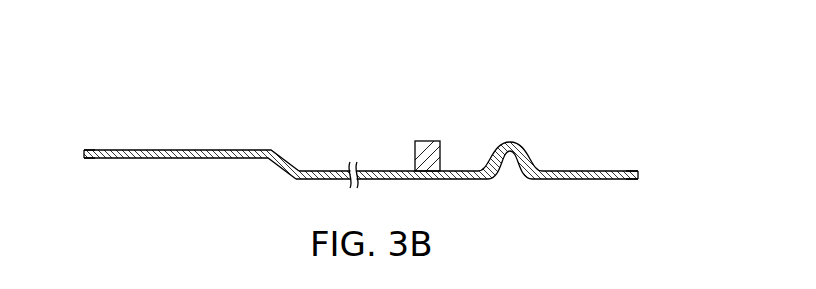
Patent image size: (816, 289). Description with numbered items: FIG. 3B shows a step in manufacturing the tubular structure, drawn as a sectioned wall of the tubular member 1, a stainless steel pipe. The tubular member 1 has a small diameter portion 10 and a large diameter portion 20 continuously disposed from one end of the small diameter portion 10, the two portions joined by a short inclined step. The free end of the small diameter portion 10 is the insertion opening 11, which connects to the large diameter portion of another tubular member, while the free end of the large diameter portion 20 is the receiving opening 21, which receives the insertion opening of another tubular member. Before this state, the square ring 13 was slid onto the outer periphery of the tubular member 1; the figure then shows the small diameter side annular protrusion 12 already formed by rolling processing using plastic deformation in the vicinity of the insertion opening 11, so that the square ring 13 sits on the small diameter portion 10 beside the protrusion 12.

The tubular member 1 is at (364, 130).
The small diameter portion 10 is at (570, 171).
The insertion opening 11 is at (628, 180).
The small diameter side annular protrusion 12 is at (511, 140).
The square ring 13 is at (430, 141).
The large diameter portion 20 is at (228, 150).
The receiving opening 21 is at (90, 159).